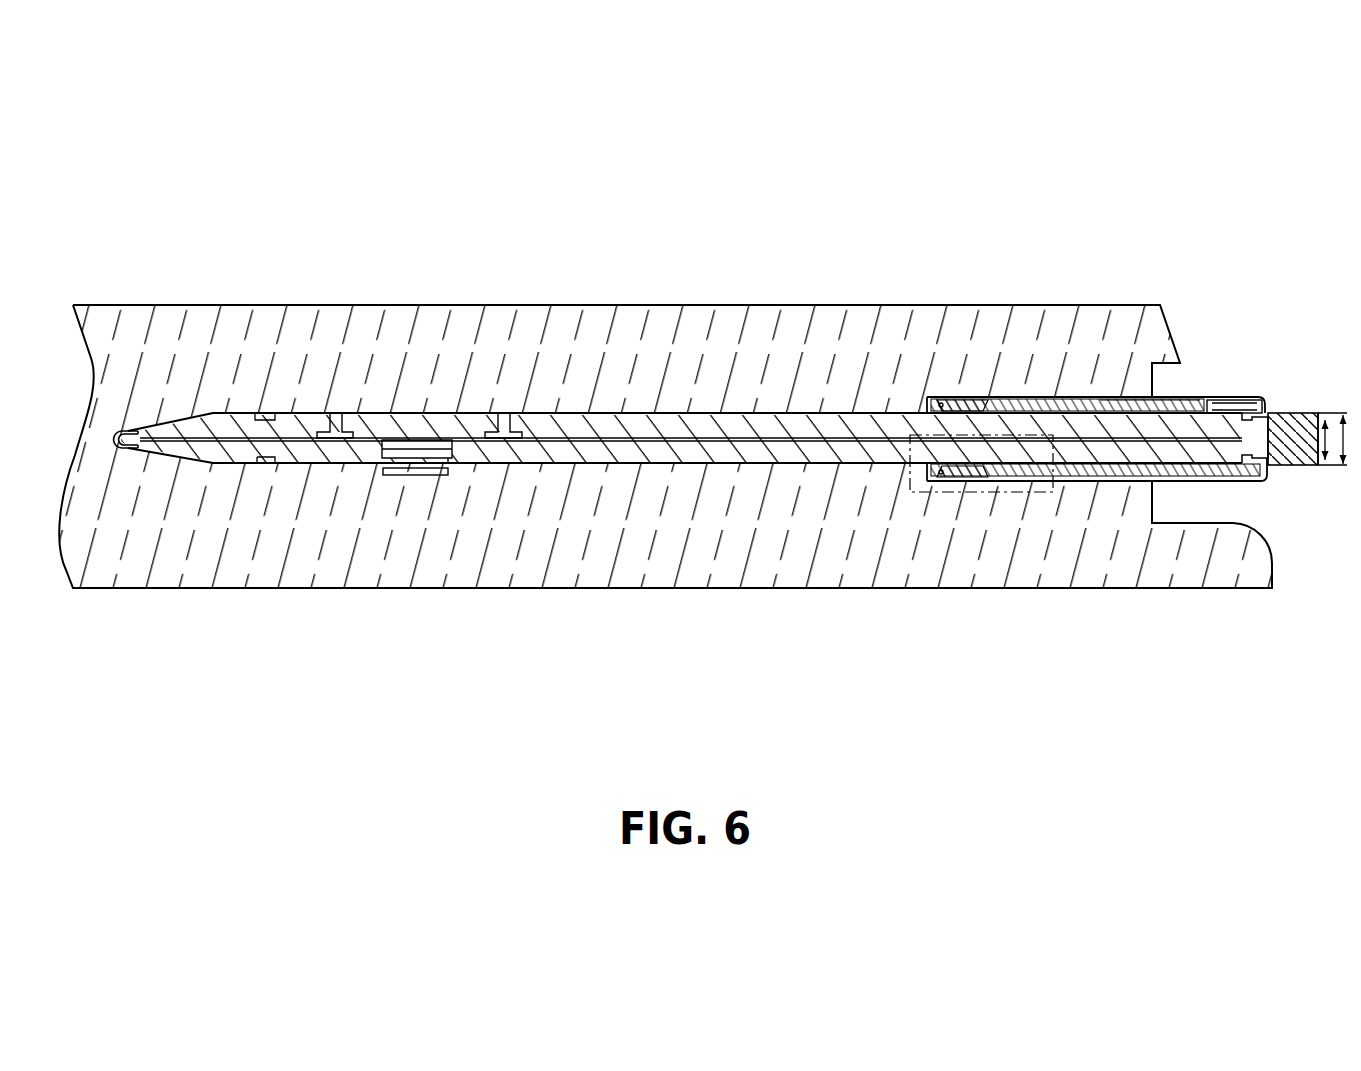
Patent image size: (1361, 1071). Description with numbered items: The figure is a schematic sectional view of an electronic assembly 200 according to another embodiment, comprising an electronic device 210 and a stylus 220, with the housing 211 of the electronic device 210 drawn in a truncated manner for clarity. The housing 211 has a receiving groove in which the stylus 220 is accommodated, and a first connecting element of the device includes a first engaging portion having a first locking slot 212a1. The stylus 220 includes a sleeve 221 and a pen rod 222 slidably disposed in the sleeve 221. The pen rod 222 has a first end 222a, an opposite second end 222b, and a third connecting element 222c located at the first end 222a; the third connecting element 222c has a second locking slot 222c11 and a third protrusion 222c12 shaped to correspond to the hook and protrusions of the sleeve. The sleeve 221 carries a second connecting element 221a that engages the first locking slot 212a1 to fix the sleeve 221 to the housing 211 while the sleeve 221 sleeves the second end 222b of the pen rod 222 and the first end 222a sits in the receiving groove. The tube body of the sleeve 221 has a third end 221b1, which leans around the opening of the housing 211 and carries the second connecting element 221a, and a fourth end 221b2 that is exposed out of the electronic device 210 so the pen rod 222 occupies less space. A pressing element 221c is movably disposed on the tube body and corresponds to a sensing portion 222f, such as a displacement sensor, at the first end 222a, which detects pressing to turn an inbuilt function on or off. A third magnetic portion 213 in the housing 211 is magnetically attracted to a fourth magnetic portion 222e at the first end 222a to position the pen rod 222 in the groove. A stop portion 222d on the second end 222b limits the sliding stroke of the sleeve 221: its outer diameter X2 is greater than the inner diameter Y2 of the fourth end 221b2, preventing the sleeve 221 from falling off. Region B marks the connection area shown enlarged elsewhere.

The electronic device 210 is at (105, 265).
The housing 211 is at (200, 323).
The pen rod 222 is at (685, 510).
The first end 222a is at (602, 451).
The second end 222b is at (1097, 452).
The third connecting element 222c is at (221, 601).
The second locking slot 222c11 is at (260, 462).
The third protrusion 222c12 is at (320, 464).
The stop portion 222d is at (1287, 467).
The fourth magnetic portion 222e is at (395, 452).
The sensing portion 222f is at (497, 414).
The third magnetic portion 213 is at (418, 472).
The first locking slot 212a1 is at (937, 481).
The sleeve 221 is at (1092, 451).
The second connecting element 221a is at (948, 483).
The third end 221b1 is at (967, 398).
The fourth end 221b2 is at (1238, 398).
The pressing element 221c is at (1167, 398).
The stylus 220 is at (1302, 504).
The electronic assembly 200 is at (1342, 741).
The region B is at (1047, 433).
The inner diameter Y2 is at (1325, 418).
The outer diameter X2 is at (1343, 413).